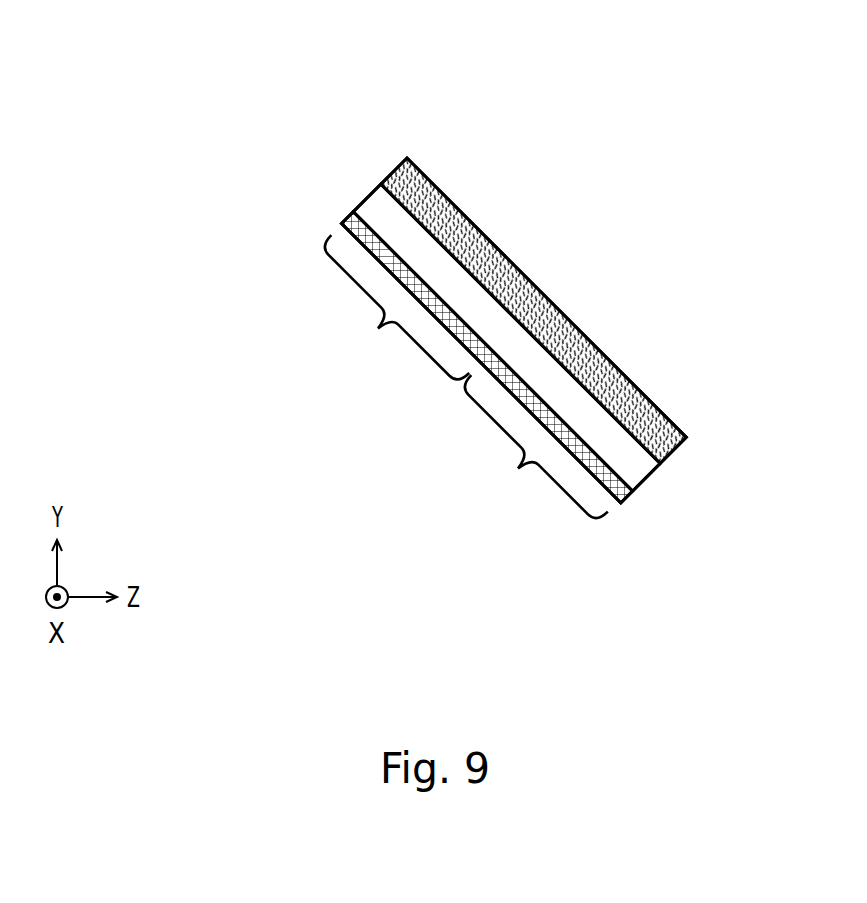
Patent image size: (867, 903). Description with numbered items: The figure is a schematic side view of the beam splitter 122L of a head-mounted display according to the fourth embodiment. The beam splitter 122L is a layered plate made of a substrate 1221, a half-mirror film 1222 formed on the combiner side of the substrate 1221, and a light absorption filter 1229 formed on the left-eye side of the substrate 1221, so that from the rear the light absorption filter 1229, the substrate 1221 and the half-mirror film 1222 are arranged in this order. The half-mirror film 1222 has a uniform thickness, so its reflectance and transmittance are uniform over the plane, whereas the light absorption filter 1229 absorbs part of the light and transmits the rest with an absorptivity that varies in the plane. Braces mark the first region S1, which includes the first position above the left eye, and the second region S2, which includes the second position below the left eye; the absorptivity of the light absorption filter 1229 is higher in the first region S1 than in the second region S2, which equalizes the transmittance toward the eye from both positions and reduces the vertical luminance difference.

The beam splitter 122L is at (342, 80).
The substrate 1221 is at (378, 200).
The half-mirror film 1222 is at (430, 182).
The light absorption filter 1229 is at (347, 219).
The first region S1 is at (388, 315).
The second region S2 is at (528, 455).